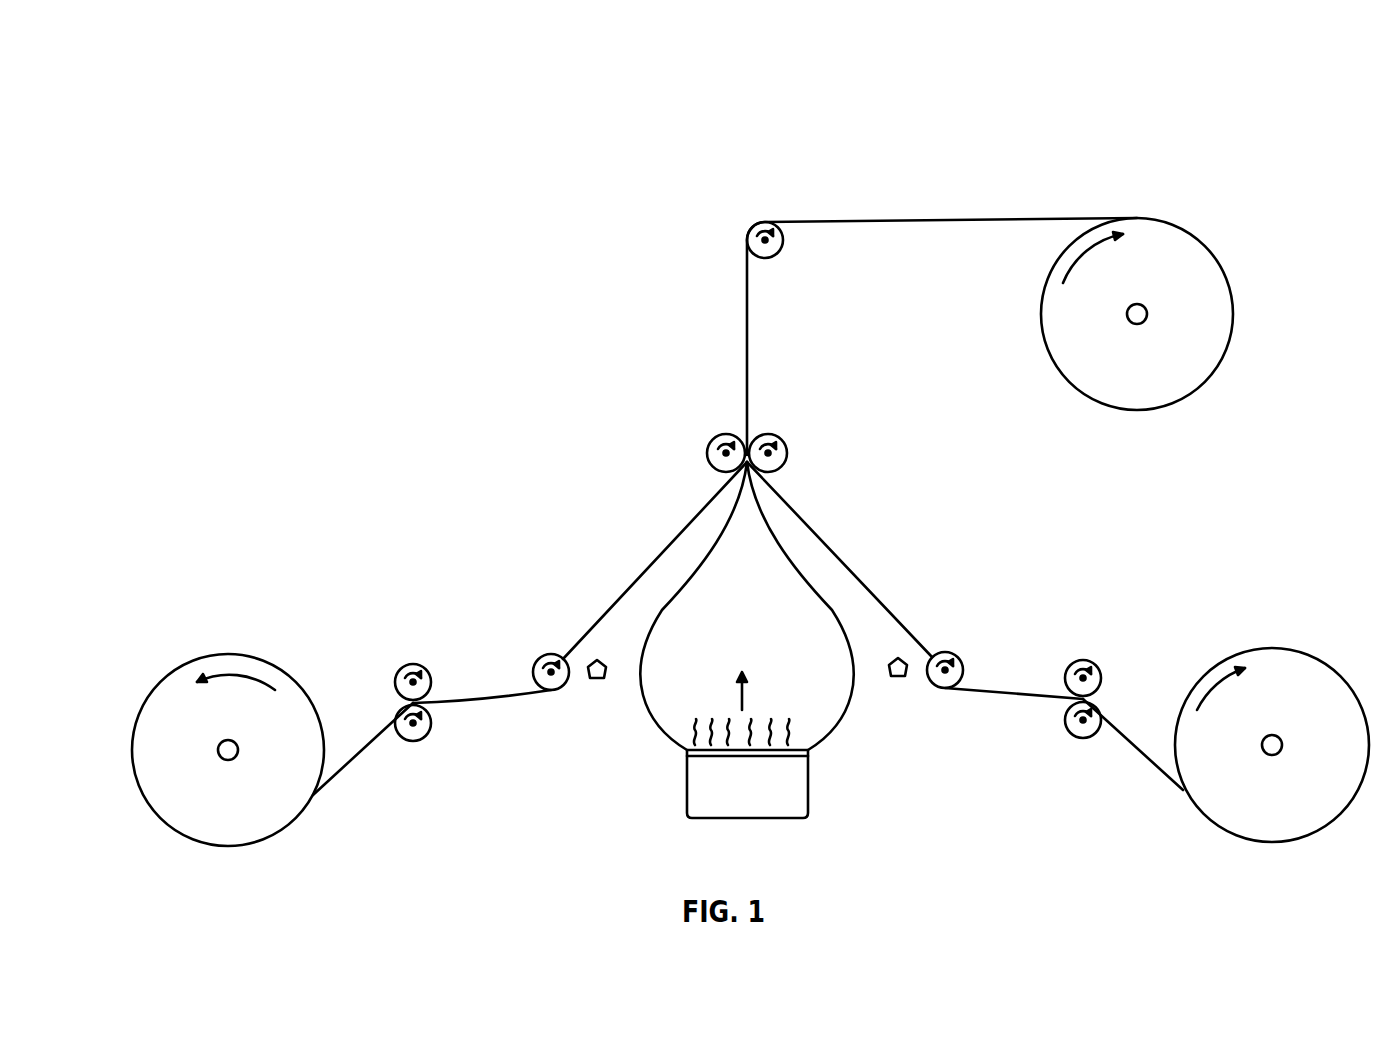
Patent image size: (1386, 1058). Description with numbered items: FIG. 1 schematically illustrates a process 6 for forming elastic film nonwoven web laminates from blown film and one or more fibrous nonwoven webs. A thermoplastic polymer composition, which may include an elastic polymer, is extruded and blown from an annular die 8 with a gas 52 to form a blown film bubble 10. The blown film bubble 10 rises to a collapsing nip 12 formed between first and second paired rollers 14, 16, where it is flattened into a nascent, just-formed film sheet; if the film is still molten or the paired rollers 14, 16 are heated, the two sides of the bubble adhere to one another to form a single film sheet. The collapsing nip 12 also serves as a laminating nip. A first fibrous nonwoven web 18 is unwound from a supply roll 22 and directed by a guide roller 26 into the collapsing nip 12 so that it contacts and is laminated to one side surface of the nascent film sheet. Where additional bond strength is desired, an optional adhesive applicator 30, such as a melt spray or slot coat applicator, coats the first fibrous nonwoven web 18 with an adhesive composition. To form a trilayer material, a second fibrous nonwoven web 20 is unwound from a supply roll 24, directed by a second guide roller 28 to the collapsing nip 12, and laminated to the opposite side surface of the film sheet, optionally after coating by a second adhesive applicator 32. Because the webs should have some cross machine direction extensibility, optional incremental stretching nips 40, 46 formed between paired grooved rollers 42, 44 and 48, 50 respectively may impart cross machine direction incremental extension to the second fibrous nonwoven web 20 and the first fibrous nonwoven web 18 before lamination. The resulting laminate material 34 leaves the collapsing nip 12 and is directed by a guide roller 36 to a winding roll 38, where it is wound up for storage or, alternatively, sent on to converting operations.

The process 6 is at (858, 57).
The annular die 8 is at (809, 768).
The blown film bubble 10 is at (663, 733).
The collapsing nip 12 is at (742, 433).
The first paired roller 14 is at (788, 452).
The second paired roller 16 is at (706, 455).
The first fibrous nonwoven web 18 is at (340, 776).
The second fibrous nonwoven web 20 is at (1160, 772).
The supply roll 22 is at (274, 664).
The supply roll 24 is at (1237, 655).
The guide roller 26 is at (539, 655).
The second guide roller 28 is at (960, 657).
The adhesive applicator 30 is at (595, 682).
The second adhesive applicator 32 is at (898, 679).
The laminate material 34 is at (745, 335).
The guide roller 36 is at (780, 254).
The winding roll 38 is at (1042, 310).
The incremental stretching nip 40 is at (1094, 701).
The grooved roller 42 is at (1078, 740).
The grooved roller 44 is at (1080, 660).
The incremental stretching nip 46 is at (404, 707).
The grooved roller 48 is at (416, 663).
The grooved roller 50 is at (413, 742).
The gas 52 is at (792, 726).